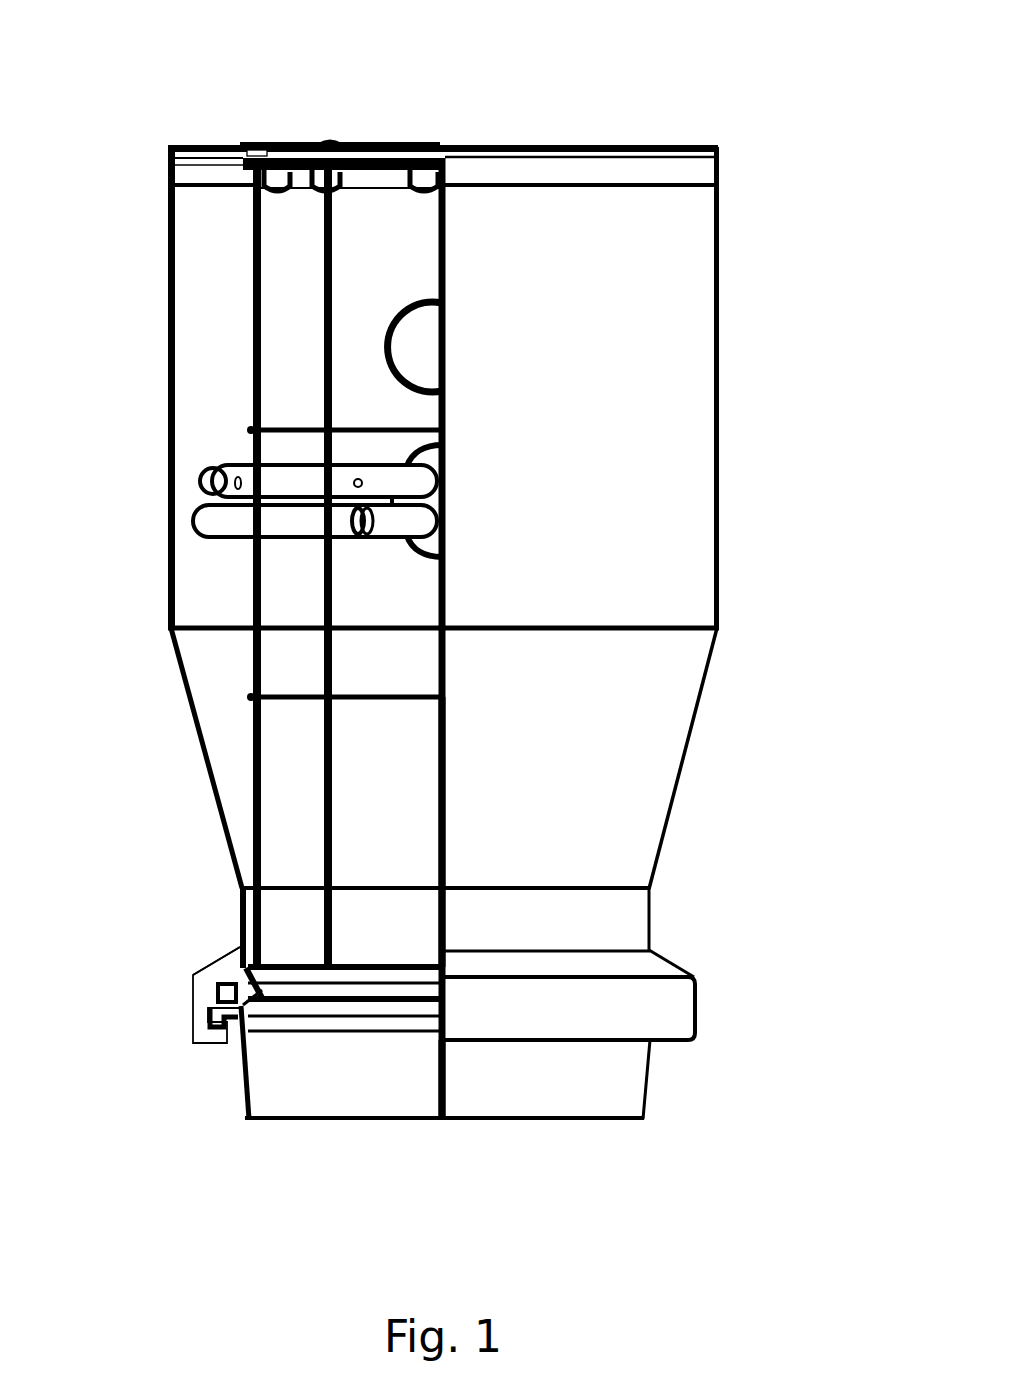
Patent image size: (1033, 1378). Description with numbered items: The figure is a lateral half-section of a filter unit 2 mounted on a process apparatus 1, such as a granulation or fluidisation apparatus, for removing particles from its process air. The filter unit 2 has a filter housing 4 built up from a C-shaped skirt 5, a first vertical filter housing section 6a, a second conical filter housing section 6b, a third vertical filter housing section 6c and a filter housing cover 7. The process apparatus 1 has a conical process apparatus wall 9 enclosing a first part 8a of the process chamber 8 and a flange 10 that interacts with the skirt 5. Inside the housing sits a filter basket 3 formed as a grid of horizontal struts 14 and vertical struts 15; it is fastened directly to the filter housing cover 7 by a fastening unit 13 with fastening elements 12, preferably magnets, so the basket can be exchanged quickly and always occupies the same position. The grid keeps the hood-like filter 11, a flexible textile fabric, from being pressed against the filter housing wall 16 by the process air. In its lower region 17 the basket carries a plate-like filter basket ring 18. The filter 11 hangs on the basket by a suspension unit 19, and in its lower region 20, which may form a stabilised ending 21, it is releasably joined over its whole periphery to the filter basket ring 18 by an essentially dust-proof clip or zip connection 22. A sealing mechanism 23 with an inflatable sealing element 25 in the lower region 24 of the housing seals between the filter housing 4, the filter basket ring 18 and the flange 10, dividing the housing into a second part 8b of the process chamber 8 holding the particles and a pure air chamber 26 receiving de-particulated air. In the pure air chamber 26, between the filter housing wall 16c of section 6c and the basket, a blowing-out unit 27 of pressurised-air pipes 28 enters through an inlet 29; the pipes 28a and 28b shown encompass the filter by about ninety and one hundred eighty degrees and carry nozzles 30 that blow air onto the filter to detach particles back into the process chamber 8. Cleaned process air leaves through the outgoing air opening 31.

The process apparatus 1 is at (693, 1112).
The filter unit 2 is at (42, 3).
The filter basket 3 is at (383, 158).
The filter housing 4 is at (762, 497).
The skirt 5 is at (175, 1000).
The first vertical filter housing section 6a is at (662, 920).
The second conical filter housing section 6b is at (702, 732).
The third vertical filter housing section 6c is at (732, 345).
The filter housing cover 7 is at (732, 168).
The process chamber 8 is at (376, 935).
The first part of the process chamber 8a is at (376, 1095).
The second part of the process chamber 8b is at (376, 794).
The process apparatus wall 9 is at (244, 1112).
The flange 10 is at (232, 1020).
The hood-like filter 11 is at (400, 195).
The fastening elements 12 is at (252, 145).
The fastening unit 13 is at (268, 130).
The horizontal struts 14 is at (285, 425).
The vertical struts 15 is at (254, 297).
The filter housing wall 16 is at (172, 356).
The filter housing wall of the third section 16c is at (172, 228).
The lower region of the filter basket 17 is at (306, 935).
The filter basket ring 18 is at (236, 983).
The suspension unit 19 is at (300, 205).
The lower region of the filter 20 is at (194, 933).
The stabilised ending 21 is at (280, 990).
The connection 22 is at (266, 998).
The sealing mechanism 23 is at (198, 975).
The lower region of the filter housing 24 is at (725, 1000).
The sealing element 25 is at (215, 1005).
The pure air chamber 26 is at (201, 275).
The blowing-out unit 27 is at (234, 554).
The pipes 28 is at (187, 500).
The first pipe 28a is at (212, 478).
The second pipe 28b is at (215, 522).
The inlet 29 is at (425, 568).
The nozzle 30 is at (240, 482).
The outgoing air opening 31 is at (420, 290).